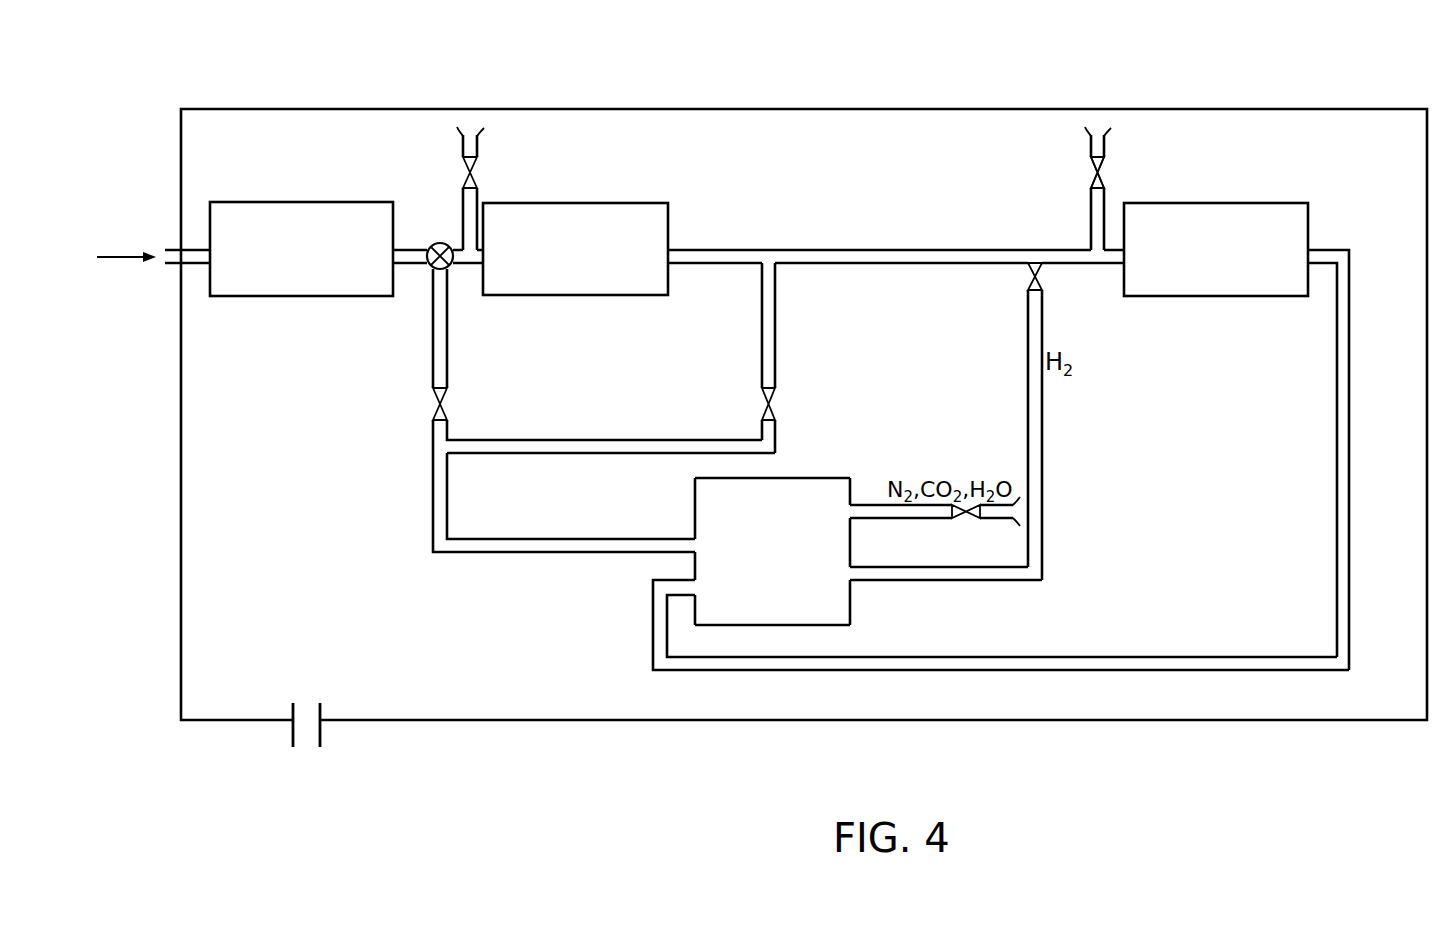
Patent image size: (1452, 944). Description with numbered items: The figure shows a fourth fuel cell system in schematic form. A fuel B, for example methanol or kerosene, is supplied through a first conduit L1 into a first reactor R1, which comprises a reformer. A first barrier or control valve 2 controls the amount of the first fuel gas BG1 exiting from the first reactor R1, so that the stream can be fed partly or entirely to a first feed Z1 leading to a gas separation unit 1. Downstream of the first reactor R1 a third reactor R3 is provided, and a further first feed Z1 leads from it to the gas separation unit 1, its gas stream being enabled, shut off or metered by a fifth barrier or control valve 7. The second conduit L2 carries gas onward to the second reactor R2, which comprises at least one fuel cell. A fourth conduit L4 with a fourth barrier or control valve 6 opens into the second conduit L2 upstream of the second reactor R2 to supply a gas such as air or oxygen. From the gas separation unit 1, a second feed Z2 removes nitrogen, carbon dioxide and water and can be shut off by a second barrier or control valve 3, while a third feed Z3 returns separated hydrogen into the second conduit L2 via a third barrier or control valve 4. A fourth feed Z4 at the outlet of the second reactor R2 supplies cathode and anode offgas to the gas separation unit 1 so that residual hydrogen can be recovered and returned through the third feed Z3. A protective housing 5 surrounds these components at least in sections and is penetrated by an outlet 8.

The gas separation unit 1 is at (772, 551).
The first barrier or control valve 2 is at (440, 243).
The second barrier or control valve 3 is at (965, 520).
The third barrier or control valve 4 is at (1030, 283).
The protective housing 5 is at (1264, 720).
The fourth barrier or control valve 6 is at (1105, 170).
The fifth barrier or control valve 7 is at (436, 404).
The outlet 8 is at (324, 727).
The fuel B is at (114, 260).
The first conduit L1 is at (200, 265).
The second conduit L2 is at (1020, 249).
The fourth conduit L4 is at (472, 212).
The first reactor R1 is at (307, 215).
The second reactor R2 is at (1255, 218).
The third reactor R3 is at (592, 220).
The first fuel gas BG1 is at (470, 268).
The first feed Z1 is at (776, 347).
The second feed Z2 is at (868, 504).
The third feed Z3 is at (980, 577).
The fourth feed Z4 is at (1338, 326).